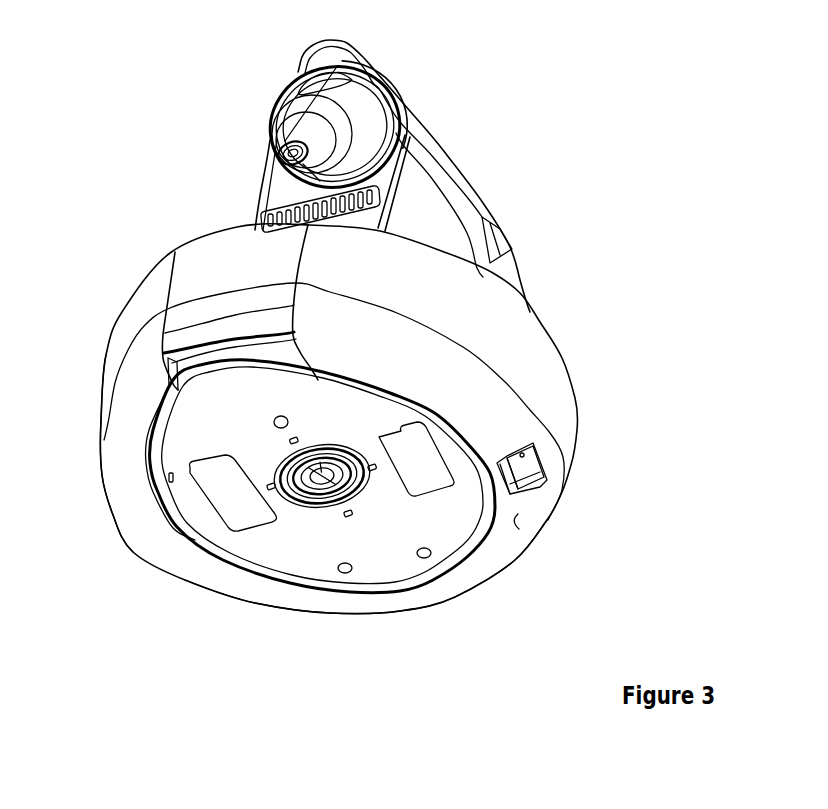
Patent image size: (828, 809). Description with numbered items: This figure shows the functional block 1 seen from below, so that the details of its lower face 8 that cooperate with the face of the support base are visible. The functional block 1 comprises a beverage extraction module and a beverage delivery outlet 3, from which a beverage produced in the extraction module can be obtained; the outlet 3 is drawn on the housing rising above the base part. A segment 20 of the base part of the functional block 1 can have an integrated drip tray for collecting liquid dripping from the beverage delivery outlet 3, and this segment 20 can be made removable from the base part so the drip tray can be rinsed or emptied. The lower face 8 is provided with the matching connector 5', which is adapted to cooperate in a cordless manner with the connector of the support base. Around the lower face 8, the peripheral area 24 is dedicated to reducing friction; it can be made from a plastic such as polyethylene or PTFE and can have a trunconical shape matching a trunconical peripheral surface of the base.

The functional block 1 is at (546, 208).
The beverage delivery outlet 3 is at (263, 152).
The matching connector 5' is at (314, 574).
The lower face 8 is at (393, 563).
The segment 20 is at (205, 317).
The peripheral area 24 is at (230, 570).